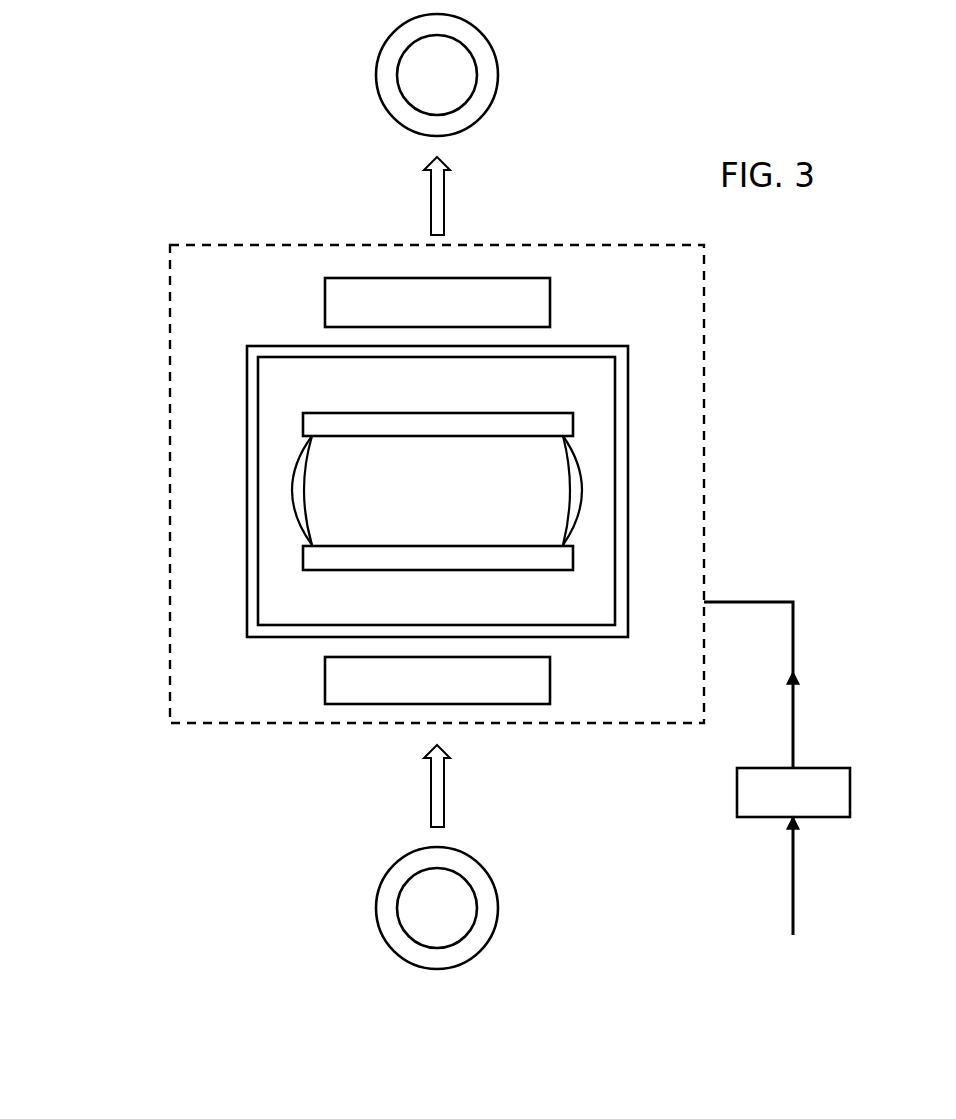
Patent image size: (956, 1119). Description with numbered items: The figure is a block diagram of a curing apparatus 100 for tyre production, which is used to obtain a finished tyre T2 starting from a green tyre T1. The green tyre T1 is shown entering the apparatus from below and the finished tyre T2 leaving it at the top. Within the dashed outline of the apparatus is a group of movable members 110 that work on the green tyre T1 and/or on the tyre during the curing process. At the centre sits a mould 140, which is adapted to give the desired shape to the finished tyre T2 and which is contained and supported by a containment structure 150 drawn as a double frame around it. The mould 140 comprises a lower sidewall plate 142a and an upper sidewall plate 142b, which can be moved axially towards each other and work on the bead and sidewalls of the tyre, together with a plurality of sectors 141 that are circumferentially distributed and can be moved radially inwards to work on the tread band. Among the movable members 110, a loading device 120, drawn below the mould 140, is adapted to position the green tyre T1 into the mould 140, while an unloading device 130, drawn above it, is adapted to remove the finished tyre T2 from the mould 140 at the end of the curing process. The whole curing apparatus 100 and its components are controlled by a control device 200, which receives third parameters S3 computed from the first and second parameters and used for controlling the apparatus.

The curing apparatus 100 is at (172, 760).
The movable members 110 is at (222, 355).
The loading device 120 is at (437, 680).
The unloading device 130 is at (437, 302).
The mould 140 is at (331, 397).
The sectors 141 is at (292, 503).
The lower sidewall plate 142a is at (562, 558).
The upper sidewall plate 142b is at (562, 425).
The containment structure 150 is at (245, 462).
The control device 200 is at (777, 709).
The green tyre T1 is at (364, 902).
The finished tyre T2 is at (364, 75).
The third parameters S3 is at (773, 876).